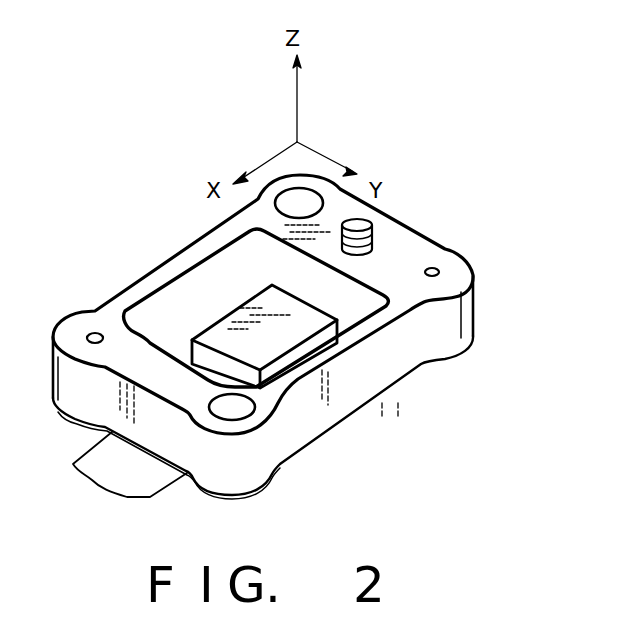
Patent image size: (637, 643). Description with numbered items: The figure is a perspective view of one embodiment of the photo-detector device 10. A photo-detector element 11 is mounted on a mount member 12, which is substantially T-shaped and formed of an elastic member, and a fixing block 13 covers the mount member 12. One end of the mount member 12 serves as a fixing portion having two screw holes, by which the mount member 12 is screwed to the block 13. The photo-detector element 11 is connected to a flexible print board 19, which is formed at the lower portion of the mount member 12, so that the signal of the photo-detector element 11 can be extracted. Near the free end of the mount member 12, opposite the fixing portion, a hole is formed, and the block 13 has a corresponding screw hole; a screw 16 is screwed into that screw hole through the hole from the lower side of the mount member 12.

The photo-detector device 10 is at (304, 349).
The photo-detector element 11 is at (298, 332).
The mount member 12 is at (253, 492).
The fixing block 13 is at (477, 318).
The screw 16 is at (361, 223).
The flexible print board 19 is at (184, 471).